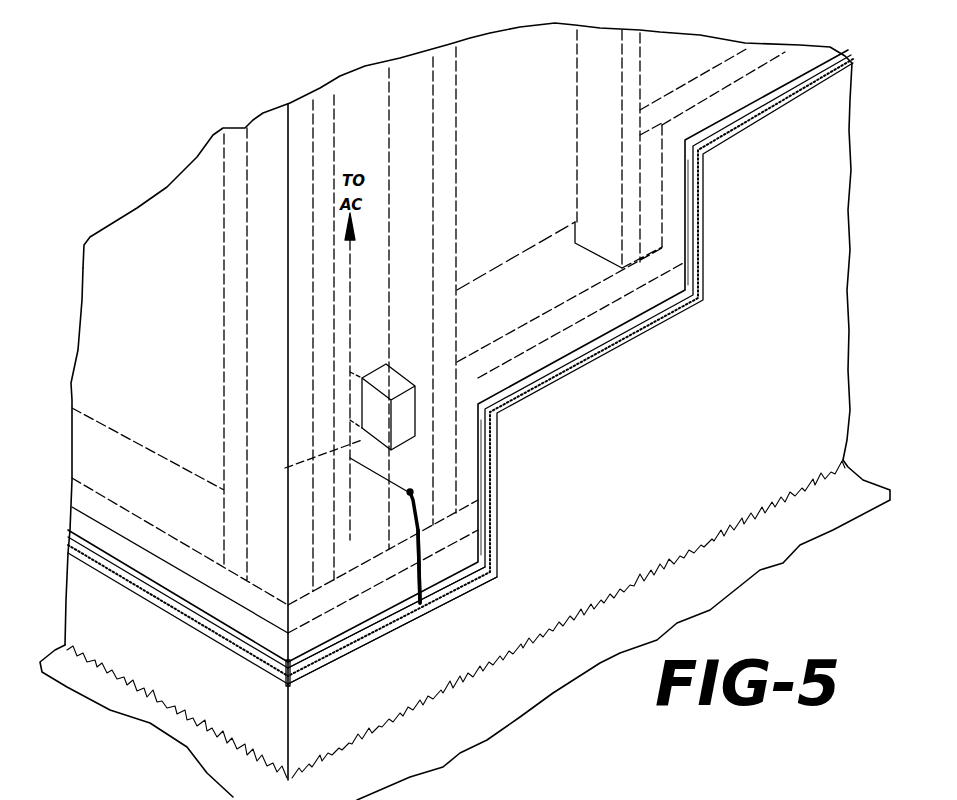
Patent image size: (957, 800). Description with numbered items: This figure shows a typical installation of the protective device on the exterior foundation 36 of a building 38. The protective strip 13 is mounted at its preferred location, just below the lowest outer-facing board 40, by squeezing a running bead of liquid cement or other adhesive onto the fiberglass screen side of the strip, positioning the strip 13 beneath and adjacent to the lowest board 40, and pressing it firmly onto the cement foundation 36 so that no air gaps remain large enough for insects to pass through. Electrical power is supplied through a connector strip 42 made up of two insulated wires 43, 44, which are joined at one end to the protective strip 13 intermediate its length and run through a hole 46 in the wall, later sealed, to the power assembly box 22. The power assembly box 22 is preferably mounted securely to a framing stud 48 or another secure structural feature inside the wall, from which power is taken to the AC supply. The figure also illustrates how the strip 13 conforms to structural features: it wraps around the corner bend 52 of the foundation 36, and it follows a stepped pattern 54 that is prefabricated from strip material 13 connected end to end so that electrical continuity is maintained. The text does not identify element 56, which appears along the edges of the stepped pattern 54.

The protective strip 13 is at (181, 613).
The power assembly box 22 is at (398, 381).
The exterior foundation 36 is at (185, 695).
The building 38 is at (165, 202).
The lowest outer-facing board 40 is at (327, 633).
The connector strip 42 is at (307, 462).
The insulated wire 43 is at (510, 565).
The insulated wire 44 is at (423, 545).
The sealed hole 46 is at (415, 490).
The framing stud 48 is at (450, 218).
The corner bend 52 is at (283, 688).
The stepped pattern 54 is at (500, 500).
The cover strip 56 is at (705, 300).